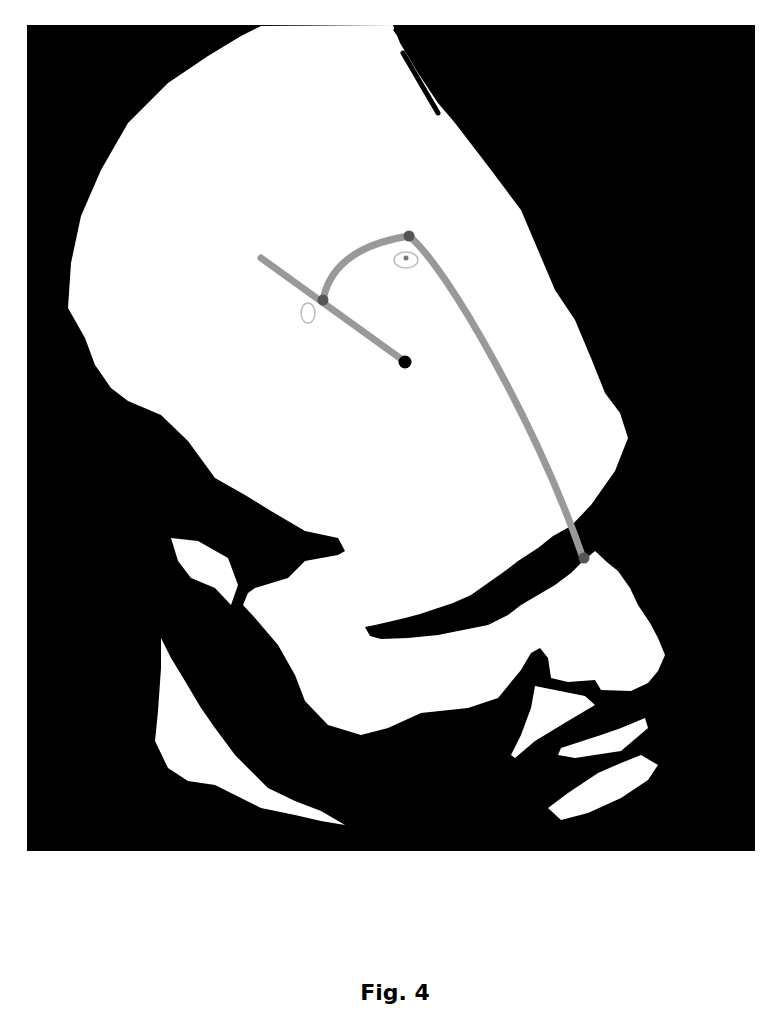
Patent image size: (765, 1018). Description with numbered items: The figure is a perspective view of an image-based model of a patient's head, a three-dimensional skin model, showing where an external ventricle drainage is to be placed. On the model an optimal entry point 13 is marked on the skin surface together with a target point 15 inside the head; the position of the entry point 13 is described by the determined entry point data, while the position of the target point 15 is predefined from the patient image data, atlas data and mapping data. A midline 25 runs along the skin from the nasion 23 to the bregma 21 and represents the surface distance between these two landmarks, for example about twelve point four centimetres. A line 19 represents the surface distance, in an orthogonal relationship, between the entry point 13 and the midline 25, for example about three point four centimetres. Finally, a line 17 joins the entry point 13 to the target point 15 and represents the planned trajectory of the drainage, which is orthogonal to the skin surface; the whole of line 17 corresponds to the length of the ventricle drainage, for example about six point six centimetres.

The entry point 13 is at (313, 290).
The target point 15 is at (392, 358).
The line 17 is at (348, 327).
The line 19 is at (354, 246).
The bregma 21 is at (401, 226).
The nasion 23 is at (577, 555).
The midline 25 is at (511, 418).